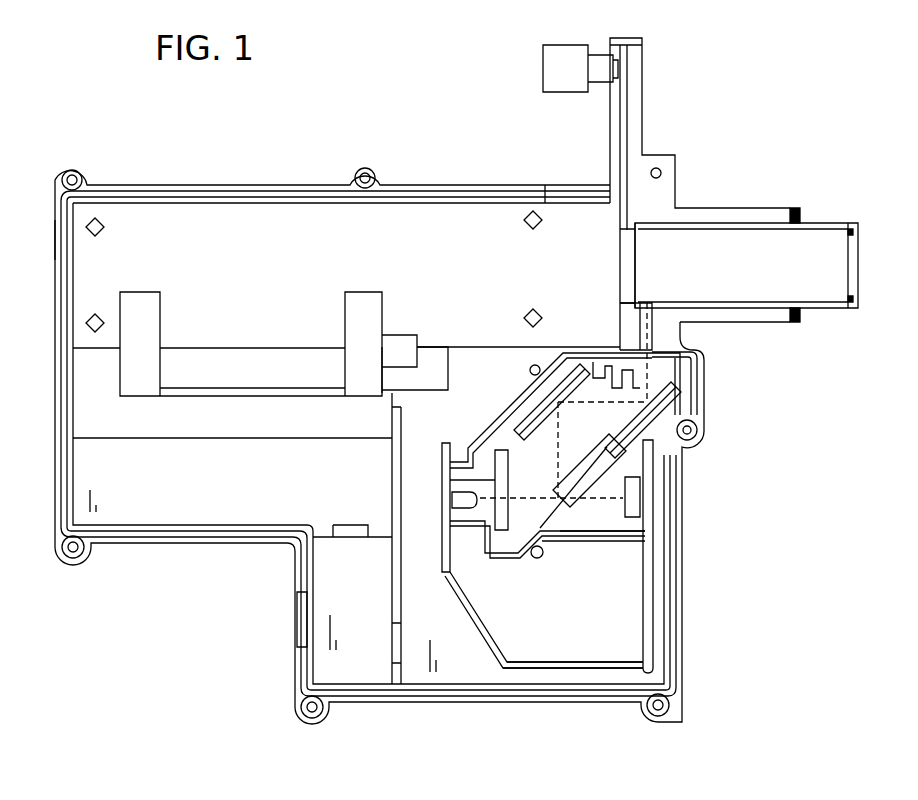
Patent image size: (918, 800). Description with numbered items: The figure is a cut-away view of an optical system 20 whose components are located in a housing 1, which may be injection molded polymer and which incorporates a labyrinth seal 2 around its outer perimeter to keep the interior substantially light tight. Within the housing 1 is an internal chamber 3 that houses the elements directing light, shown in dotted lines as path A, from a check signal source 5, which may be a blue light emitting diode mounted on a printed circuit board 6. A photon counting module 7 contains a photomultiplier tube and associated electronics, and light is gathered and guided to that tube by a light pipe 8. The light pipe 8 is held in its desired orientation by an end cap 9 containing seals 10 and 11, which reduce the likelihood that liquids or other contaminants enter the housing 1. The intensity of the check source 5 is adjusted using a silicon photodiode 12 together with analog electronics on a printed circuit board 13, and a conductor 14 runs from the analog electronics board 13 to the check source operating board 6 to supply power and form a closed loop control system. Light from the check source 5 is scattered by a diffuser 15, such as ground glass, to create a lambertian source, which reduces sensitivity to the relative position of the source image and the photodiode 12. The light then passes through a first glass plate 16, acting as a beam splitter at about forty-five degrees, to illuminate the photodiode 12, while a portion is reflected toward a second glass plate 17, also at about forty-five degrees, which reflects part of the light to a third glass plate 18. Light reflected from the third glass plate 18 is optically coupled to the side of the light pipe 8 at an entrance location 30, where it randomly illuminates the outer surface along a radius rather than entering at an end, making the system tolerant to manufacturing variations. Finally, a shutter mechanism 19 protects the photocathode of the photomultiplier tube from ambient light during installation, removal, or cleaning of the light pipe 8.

The housing 1 is at (130, 185).
The labyrinth seal 2 is at (60, 232).
The internal chamber 3 is at (626, 541).
The check signal source 5 is at (462, 500).
The printed circuit board 6 is at (443, 440).
The photon counting module 7 is at (205, 330).
The light pipe 8 is at (643, 232).
The end cap 9 is at (824, 312).
The seal 10 is at (795, 208).
The seal 11 is at (851, 312).
The silicon photodiode 12 is at (632, 510).
The printed circuit board 13 is at (650, 668).
The conductor 14 is at (536, 668).
The diffuser 15 is at (500, 532).
The first glass plate 16 is at (548, 500).
The second glass plate 17 is at (542, 410).
The third glass plate 18 is at (700, 430).
The shutter mechanism 19 is at (628, 102).
The optical system 20 is at (416, 720).
The entrance location 30 is at (650, 306).
The light beam path A is at (560, 538).